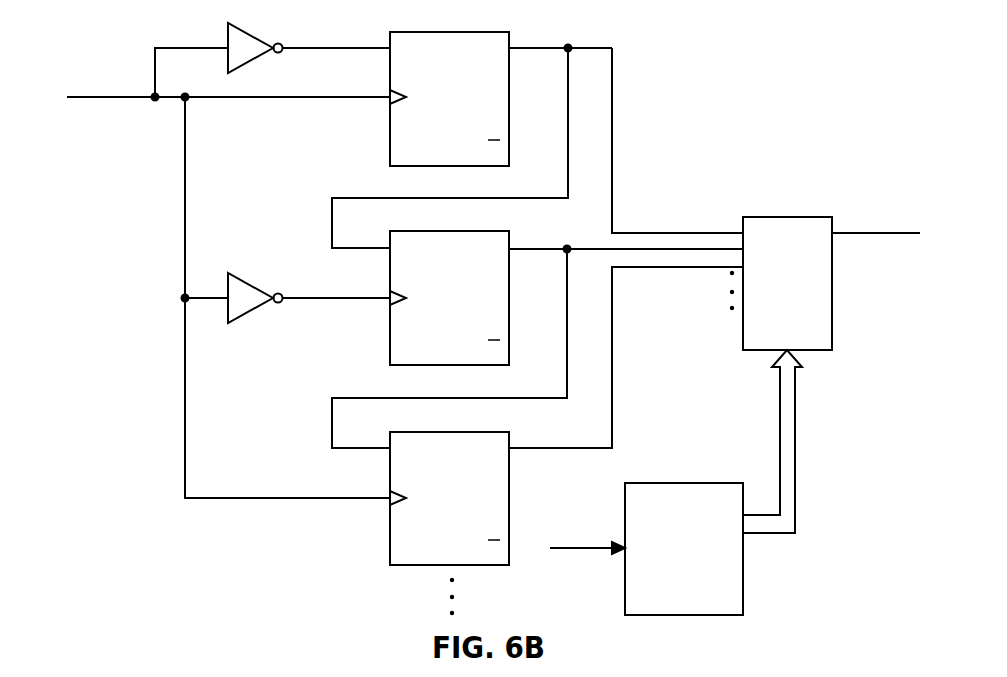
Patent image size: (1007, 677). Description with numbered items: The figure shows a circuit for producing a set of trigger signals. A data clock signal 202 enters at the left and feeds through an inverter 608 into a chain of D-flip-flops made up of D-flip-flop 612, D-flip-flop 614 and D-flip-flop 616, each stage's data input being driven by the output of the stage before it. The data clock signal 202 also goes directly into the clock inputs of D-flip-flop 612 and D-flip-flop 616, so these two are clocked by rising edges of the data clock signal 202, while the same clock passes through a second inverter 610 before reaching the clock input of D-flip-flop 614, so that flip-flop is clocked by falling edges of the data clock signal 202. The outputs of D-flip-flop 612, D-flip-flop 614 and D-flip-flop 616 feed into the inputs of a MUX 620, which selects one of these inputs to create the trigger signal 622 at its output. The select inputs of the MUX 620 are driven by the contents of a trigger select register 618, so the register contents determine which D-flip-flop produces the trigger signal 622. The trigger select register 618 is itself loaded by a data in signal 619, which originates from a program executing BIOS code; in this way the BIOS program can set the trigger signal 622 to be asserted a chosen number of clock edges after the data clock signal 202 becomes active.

The data clock signal 202 is at (210, 273).
The inverter 608 is at (309, 39).
The inverter 610 is at (309, 307).
The D-flip-flop 612 is at (537, 140).
The D-flip-flop 614 is at (537, 339).
The D-flip-flop 616 is at (566, 416).
The trigger select register 618 is at (684, 549).
The data in signal 619 is at (582, 504).
The MUX 620 is at (787, 375).
The trigger signal 622 is at (876, 234).